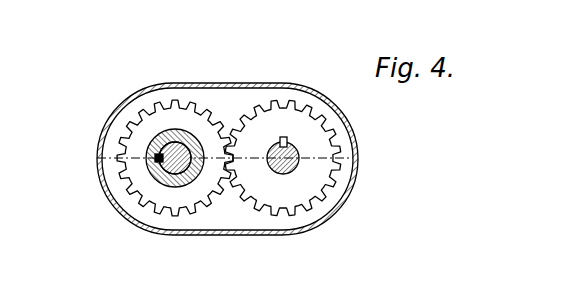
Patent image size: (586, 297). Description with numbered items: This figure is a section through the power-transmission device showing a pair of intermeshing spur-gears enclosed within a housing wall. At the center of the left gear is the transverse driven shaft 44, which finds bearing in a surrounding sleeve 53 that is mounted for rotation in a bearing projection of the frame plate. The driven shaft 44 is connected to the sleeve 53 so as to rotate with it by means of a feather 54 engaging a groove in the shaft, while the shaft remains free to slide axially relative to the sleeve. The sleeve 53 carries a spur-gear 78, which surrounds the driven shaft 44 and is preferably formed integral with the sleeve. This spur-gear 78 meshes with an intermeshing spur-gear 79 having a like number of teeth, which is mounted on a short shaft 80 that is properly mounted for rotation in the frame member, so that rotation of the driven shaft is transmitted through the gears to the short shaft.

The driven shaft 44 is at (155, 152).
The sleeve 53 is at (150, 175).
The feather 54 is at (122, 151).
The spur-gear 78 is at (175, 158).
The intermeshing spur-gear 79 is at (282, 157).
The short shaft 80 is at (298, 150).